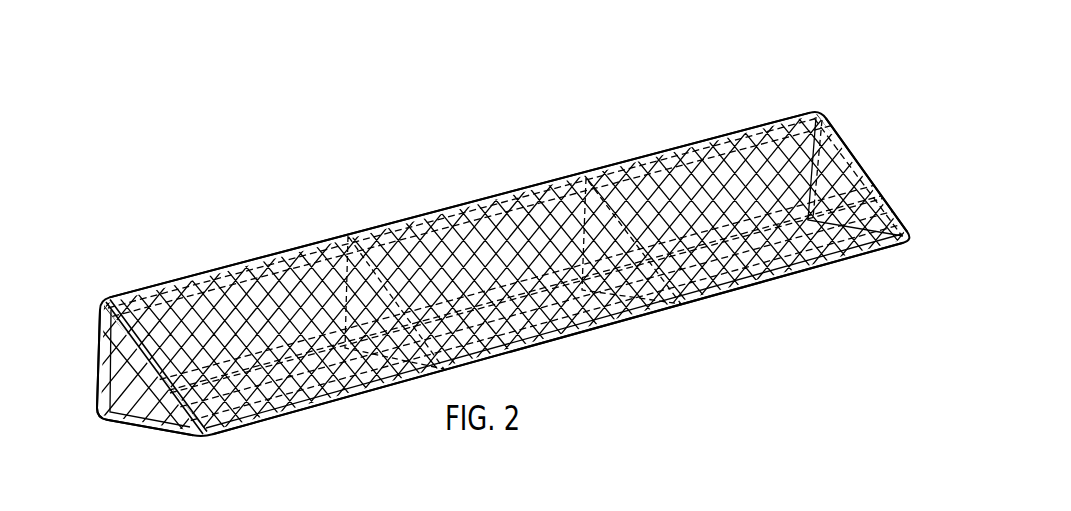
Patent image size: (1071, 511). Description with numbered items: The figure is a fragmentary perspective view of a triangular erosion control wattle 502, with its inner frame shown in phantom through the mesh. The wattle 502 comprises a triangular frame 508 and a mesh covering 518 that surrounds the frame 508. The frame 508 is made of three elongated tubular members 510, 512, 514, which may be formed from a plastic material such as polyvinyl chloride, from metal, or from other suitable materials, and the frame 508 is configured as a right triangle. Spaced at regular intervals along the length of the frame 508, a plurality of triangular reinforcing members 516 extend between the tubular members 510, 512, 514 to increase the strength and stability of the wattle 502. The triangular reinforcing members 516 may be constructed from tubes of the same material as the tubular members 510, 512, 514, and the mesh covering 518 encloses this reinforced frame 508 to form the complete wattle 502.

The triangular wattle 502 is at (752, 82).
The triangular frame 508 is at (104, 422).
The elongated tubular member 510 is at (250, 376).
The elongated tubular member 512 is at (417, 215).
The elongated tubular member 514 is at (734, 289).
The triangular reinforcing member 516 is at (376, 280).
The mesh covering 518 is at (810, 155).